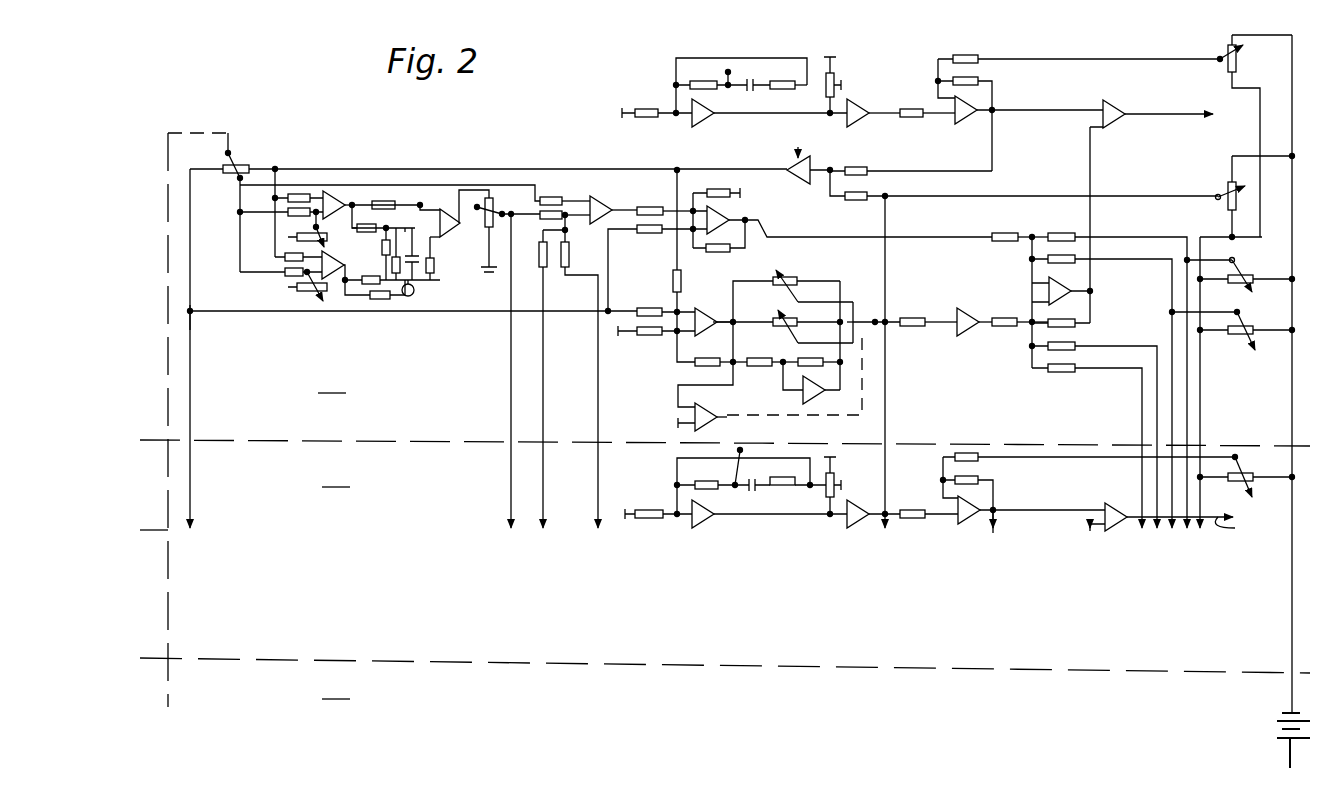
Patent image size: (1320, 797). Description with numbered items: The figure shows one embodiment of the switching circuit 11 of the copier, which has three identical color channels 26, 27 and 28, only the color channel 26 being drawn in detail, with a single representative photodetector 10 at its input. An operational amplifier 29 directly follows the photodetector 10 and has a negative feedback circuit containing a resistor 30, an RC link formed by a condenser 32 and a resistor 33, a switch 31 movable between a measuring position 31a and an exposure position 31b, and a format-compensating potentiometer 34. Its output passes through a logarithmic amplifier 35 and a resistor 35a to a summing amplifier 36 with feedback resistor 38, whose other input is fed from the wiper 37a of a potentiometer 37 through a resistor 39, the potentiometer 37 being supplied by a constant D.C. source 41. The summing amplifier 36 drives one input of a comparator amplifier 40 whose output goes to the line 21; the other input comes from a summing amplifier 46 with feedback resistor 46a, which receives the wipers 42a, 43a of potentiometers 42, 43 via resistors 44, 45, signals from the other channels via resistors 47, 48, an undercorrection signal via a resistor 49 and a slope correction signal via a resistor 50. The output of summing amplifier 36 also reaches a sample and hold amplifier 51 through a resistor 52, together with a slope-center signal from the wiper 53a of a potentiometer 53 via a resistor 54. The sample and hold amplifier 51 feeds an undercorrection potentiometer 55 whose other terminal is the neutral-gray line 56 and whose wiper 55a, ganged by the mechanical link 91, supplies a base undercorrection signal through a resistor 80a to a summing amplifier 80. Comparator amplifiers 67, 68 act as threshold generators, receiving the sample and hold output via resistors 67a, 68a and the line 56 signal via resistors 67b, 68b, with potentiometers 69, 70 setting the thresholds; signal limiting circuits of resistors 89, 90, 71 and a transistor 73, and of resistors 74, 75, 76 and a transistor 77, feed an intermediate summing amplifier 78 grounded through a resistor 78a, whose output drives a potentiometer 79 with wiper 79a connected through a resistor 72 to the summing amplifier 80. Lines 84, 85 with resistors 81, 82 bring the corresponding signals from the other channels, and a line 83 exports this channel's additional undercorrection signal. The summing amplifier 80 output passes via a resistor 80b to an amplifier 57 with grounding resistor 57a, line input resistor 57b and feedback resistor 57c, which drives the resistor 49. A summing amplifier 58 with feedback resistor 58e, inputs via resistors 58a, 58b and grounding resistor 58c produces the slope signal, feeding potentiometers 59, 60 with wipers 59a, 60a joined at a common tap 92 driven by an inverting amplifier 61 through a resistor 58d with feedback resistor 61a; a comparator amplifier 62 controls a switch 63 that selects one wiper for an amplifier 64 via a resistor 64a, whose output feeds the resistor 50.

The photodetector 10 is at (655, 112).
The switching circuit 11 is at (1302, 92).
The line 21 is at (1150, 118).
The color channel 26 is at (332, 383).
The color channel 27 is at (336, 477).
The color channel 28 is at (336, 689).
The operational amplifier 29 is at (704, 120).
The resistor 30 is at (690, 84).
The switch 31 is at (733, 72).
The switch position 31a is at (732, 68).
The switch position 31b is at (722, 58).
The condenser 32 is at (745, 90).
The resistor 33 is at (790, 88).
The potentiometer 34 is at (838, 82).
The logarithmic amplifier 35 is at (860, 118).
The resistor 35a is at (912, 109).
The summing amplifier 36 is at (966, 117).
The potentiometer 37 is at (1228, 50).
The wiper 37a is at (1240, 55).
The resistor 38 is at (975, 79).
The resistor 39 is at (952, 60).
The comparator amplifier 40 is at (1118, 106).
The source of D.C. voltage 41 is at (1278, 728).
The potentiometer 42 is at (1248, 270).
The wiper 42a is at (1253, 298).
The potentiometer 43 is at (1233, 338).
The wiper 43a is at (1258, 350).
The resistor 44 is at (1058, 233).
The resistor 45 is at (1070, 263).
The summing amplifier 46 is at (1062, 296).
The resistor 46a is at (1078, 320).
The resistor 47 is at (1068, 348).
The resistor 48 is at (1065, 371).
The resistor 49 is at (1004, 241).
The resistor 50 is at (1002, 327).
The sample and hold amplifier 51 is at (802, 184).
The resistor 52 is at (856, 167).
The potentiometer 53 is at (1215, 196).
The wiper 53a is at (1243, 182).
The resistor 54 is at (853, 200).
The undercorrection potentiometer 55 is at (236, 166).
The wiper 55a is at (226, 153).
The line 56 is at (191, 398).
The amplifier 57 is at (735, 216).
The resistor 57a is at (718, 189).
The resistor 57b is at (652, 233).
The resistor 57c is at (778, 268).
The summing amplifier 58 is at (711, 310).
The resistor 58a is at (673, 278).
The resistor 58b is at (655, 309).
The resistor 58c is at (650, 335).
The resistor 58d is at (740, 366).
The resistor 58e is at (722, 338).
The potentiometer 59 is at (786, 278).
The wiper 59a is at (734, 252).
The potentiometer 60 is at (782, 334).
The wiper 60a is at (784, 305).
The inverting amplifier 61 is at (805, 397).
The resistor 61a is at (810, 358).
The comparator amplifier 62 is at (712, 410).
The switch 63 is at (862, 336).
The amplifier 64 is at (968, 312).
The resistor 64a is at (912, 318).
The comparator amplifier 67 is at (336, 195).
The resistor 67a is at (296, 194).
The resistor 67b is at (290, 215).
The comparator amplifier 68 is at (336, 285).
The resistor 68a is at (286, 260).
The resistor 68b is at (291, 276).
The potentiometer 69 is at (290, 238).
The potentiometer 70 is at (301, 292).
The resistor 71 is at (383, 246).
The resistor 72 is at (565, 197).
The transistor 73 is at (405, 231).
The resistor 74 is at (380, 299).
The resistor 75 is at (406, 298).
The resistor 76 is at (392, 267).
The transistor 77 is at (414, 286).
The intermediate summing amplifier 78 is at (452, 232).
The resistor 78a is at (434, 268).
The potentiometer 79 is at (489, 196).
The wiper 79a is at (478, 205).
The summing amplifier 80 is at (606, 200).
The resistor 80a is at (553, 211).
The resistor 80b is at (652, 207).
The resistor 81 is at (548, 263).
The resistor 82 is at (570, 255).
The line 83 is at (511, 410).
The line 84 is at (542, 393).
The line 85 is at (597, 358).
The resistor 89 is at (390, 201).
The resistor 90 is at (374, 201).
The mechanical link 91 is at (191, 330).
The common tap 92 is at (848, 324).